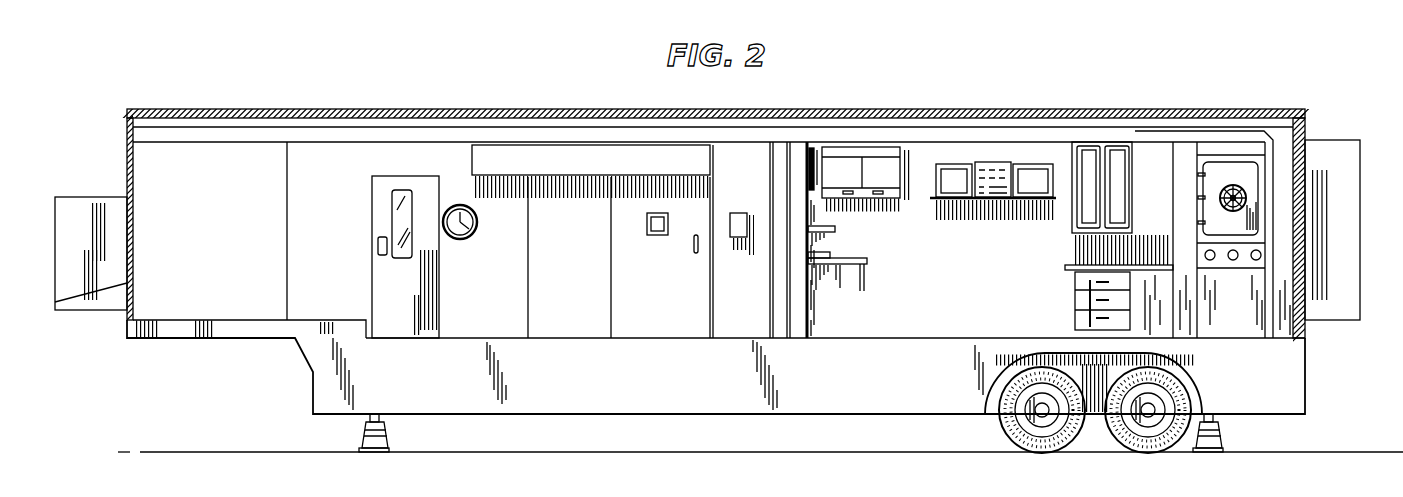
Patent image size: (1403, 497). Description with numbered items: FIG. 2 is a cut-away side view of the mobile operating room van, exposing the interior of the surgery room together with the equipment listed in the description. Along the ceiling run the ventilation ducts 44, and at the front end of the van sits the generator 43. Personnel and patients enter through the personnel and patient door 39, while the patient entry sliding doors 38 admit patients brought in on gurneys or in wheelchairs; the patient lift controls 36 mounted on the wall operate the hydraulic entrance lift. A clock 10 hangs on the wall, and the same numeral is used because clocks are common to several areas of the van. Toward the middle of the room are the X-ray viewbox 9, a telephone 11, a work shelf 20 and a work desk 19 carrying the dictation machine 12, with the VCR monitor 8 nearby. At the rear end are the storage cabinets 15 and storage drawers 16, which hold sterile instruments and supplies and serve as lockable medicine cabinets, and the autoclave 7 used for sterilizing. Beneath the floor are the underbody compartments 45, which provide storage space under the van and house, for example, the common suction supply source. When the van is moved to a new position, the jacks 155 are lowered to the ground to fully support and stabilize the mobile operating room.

The autoclave 7 is at (1258, 187).
The VCR monitor 8 is at (990, 200).
The X-ray viewbox 9 is at (876, 167).
The clock 10 is at (478, 225).
The telephone 11 is at (822, 205).
The dictation machine 12 is at (836, 254).
The storage cabinets 15 is at (1140, 162).
The storage drawers 16 is at (1078, 308).
The work desk 19 is at (848, 277).
The work shelf 20 is at (835, 229).
The patient lift controls 36 is at (738, 257).
The patient entry sliding doors 38 is at (674, 305).
The personnel and patient door 39 is at (412, 292).
The generator 43 is at (87, 197).
The ventilation ducts 44 is at (452, 127).
The underbody compartments 45 is at (1272, 388).
The jacks 155 is at (389, 430).